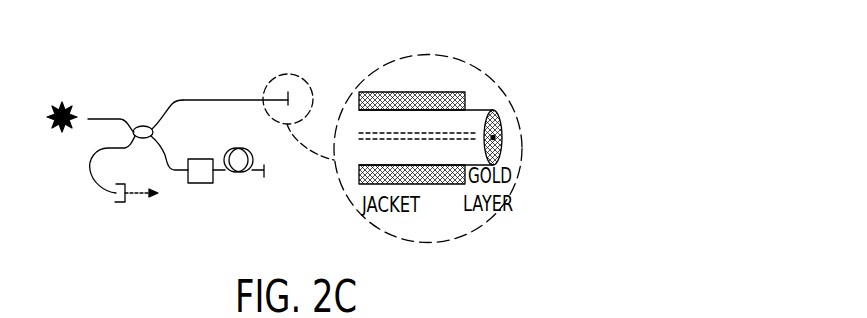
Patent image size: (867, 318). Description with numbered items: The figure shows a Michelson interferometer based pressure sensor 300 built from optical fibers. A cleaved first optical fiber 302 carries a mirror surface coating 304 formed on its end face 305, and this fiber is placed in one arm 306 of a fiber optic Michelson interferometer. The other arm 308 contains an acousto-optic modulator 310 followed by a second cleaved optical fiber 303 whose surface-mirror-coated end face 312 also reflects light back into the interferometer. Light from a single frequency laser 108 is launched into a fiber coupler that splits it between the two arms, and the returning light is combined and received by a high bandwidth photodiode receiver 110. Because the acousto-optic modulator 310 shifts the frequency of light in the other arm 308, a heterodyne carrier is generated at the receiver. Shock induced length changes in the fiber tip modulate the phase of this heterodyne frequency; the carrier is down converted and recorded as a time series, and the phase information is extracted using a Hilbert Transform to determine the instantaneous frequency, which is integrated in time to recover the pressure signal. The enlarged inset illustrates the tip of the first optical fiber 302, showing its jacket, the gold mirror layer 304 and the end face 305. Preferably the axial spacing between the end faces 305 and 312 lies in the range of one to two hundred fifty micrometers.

The Michelson interferometer based sensor 300 is at (173, 77).
The first optical fiber 302 is at (252, 100).
The second cleaved optical fiber 303 is at (248, 173).
The mirror surface coating 304 is at (496, 123).
The end face 305 is at (290, 99).
The arm 306 is at (183, 100).
The other arm 308 is at (170, 170).
The acousto-optic modulator 310 is at (202, 183).
The surface-mirror-coated end face 312 is at (265, 172).
The single frequency laser 108 is at (55, 130).
The high bandwidth photodiode receiver 110 is at (117, 204).